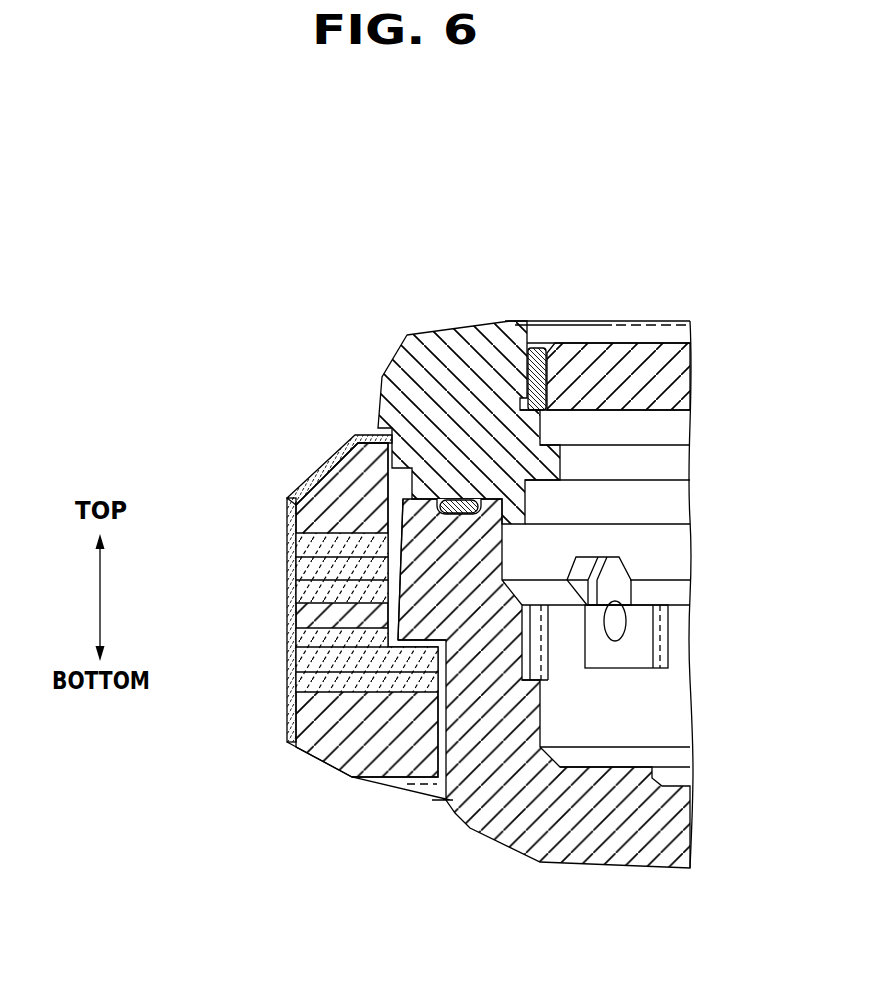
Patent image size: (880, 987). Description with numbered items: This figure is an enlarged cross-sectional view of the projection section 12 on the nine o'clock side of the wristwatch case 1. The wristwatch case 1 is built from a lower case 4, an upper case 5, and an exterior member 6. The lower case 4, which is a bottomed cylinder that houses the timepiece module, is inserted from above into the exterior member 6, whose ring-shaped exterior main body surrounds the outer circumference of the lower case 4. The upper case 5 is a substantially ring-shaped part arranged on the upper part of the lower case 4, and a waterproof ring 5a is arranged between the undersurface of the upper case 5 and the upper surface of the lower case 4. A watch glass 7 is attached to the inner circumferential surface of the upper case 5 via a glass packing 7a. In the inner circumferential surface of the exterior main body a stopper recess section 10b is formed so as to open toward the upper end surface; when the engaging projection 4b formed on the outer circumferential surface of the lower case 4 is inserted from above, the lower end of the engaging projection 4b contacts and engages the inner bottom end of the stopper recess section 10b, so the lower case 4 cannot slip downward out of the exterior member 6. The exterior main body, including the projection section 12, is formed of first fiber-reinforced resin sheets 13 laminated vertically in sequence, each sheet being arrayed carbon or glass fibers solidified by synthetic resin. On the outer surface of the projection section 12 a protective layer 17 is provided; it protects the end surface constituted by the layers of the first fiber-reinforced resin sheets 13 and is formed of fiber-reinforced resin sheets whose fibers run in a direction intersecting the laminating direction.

The wristwatch case 1 is at (310, 565).
The lower case 4 is at (581, 642).
The engaging projection 4b is at (407, 637).
The upper case 5 is at (479, 304).
The waterproof ring 5a is at (472, 498).
The exterior member 6 is at (264, 511).
The watch glass 7 is at (667, 373).
The glass packing 7a is at (538, 410).
The stopper recess section 10b is at (393, 593).
The projection section 12 is at (303, 612).
The first fiber-reinforced resin sheet 13 is at (307, 587).
The protective layer 17 is at (303, 483).